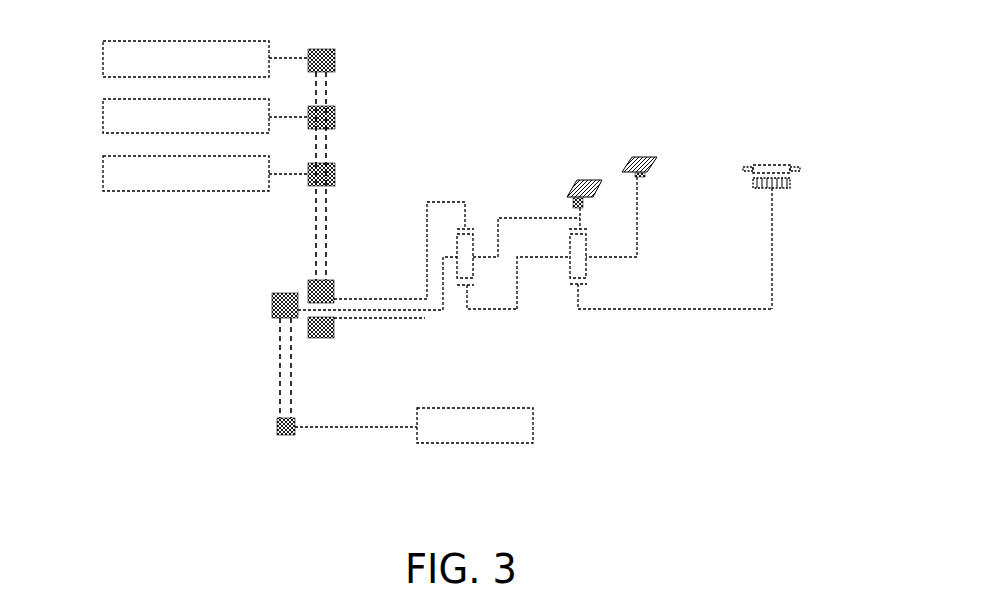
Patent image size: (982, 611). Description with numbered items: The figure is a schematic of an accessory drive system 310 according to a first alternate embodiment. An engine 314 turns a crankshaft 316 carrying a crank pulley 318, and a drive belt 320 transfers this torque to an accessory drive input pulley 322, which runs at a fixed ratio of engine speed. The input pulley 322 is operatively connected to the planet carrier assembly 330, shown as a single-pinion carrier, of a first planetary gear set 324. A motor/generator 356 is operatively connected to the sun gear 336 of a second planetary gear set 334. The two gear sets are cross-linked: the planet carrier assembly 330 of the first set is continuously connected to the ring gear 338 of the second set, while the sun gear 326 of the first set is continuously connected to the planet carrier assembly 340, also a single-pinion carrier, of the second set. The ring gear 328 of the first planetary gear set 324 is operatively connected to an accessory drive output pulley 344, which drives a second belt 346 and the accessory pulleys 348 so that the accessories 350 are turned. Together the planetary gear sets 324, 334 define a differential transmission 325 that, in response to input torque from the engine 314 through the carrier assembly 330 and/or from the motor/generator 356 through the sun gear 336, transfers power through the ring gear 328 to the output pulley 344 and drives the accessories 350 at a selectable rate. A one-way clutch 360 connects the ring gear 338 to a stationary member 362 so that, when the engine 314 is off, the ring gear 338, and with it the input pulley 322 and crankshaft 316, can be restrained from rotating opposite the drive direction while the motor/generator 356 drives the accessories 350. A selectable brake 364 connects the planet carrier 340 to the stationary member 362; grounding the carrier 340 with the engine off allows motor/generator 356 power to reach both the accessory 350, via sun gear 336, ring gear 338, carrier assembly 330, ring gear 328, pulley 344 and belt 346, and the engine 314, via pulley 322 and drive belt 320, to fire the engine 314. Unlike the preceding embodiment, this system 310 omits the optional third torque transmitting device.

The accessory drive system 310 is at (773, 71).
The engine 314 is at (505, 443).
The crankshaft 316 is at (358, 430).
The crank pulley 318 is at (277, 422).
The drive belt 320 is at (272, 366).
The accessory drive input pulley 322 is at (272, 303).
The first planetary gear set 324 is at (484, 284).
The differential transmission 325 is at (761, 384).
The sun gear 326 is at (462, 286).
The ring gear 328 is at (463, 229).
The planet carrier assembly 330 is at (487, 257).
The second planetary gear set 334 is at (609, 284).
The sun gear 336 is at (573, 285).
The ring gear 338 is at (582, 229).
The planet carrier assembly 340 is at (545, 257).
The accessory drive output pulley 344 is at (307, 290).
The second belt 346 is at (306, 222).
The accessory pulleys 348 is at (336, 62).
The accessories 350 is at (103, 61).
The motor/generator 356 is at (773, 156).
The one-way clutch 360 is at (572, 203).
The stationary member 362 is at (605, 184).
The selectable brake 364 is at (643, 175).